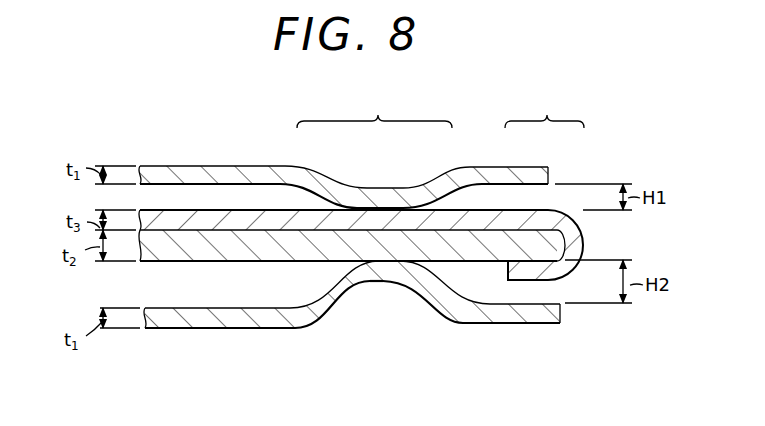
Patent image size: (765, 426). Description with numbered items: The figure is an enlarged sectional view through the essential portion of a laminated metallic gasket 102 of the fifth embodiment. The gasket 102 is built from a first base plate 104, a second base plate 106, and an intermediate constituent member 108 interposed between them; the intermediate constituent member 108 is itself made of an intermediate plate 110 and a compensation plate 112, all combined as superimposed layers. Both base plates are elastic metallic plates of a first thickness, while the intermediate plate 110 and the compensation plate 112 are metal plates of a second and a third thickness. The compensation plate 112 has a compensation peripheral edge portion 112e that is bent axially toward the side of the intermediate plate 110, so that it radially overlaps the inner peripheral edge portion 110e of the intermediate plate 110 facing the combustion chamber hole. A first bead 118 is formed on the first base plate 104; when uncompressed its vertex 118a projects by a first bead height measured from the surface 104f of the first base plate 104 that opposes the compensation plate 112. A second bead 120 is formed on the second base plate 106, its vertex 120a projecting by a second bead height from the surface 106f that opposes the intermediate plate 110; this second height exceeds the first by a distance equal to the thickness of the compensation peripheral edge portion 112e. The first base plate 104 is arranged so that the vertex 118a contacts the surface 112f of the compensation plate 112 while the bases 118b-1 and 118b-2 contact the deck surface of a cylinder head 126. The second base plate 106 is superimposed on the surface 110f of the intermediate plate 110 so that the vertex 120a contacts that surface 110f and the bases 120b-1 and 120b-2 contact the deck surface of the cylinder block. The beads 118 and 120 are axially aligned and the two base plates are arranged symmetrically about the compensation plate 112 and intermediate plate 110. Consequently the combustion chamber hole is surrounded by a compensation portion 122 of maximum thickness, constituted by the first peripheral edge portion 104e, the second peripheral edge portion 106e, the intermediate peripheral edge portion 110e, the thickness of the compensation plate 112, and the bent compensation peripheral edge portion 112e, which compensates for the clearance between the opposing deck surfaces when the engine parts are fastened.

The laminated metallic gasket 102 is at (168, 112).
The first base plate 104 is at (184, 162).
The surface of the first base plate 104f is at (224, 197).
The first peripheral edge portion 104e is at (545, 165).
The second base plate 106 is at (236, 332).
The surface of the second base plate 106f is at (171, 302).
The second peripheral edge portion 106e is at (549, 318).
The intermediate constituent member 108 is at (145, 271).
The intermediate plate 110 is at (237, 253).
The surface of the intermediate plate 110f is at (323, 265).
The inner peripheral edge portion of the intermediate plate 110e is at (566, 237).
The compensation plate 112 is at (200, 226).
The surface of the compensation plate 112f is at (145, 208).
The compensation peripheral edge portion 112e is at (540, 272).
The first bead 118 is at (398, 192).
The vertex of the first bead 118a is at (437, 208).
The base of the first bead 118b-1 is at (449, 169).
The base of the first bead 118b-2 is at (302, 164).
The second bead 120 is at (417, 287).
The vertex of the second bead 120a is at (402, 257).
The base of the second bead 120b-1 is at (461, 326).
The base of the second bead 120b-2 is at (323, 325).
The compensation portion 122 is at (544, 109).
The cylinder head 126 is at (374, 109).